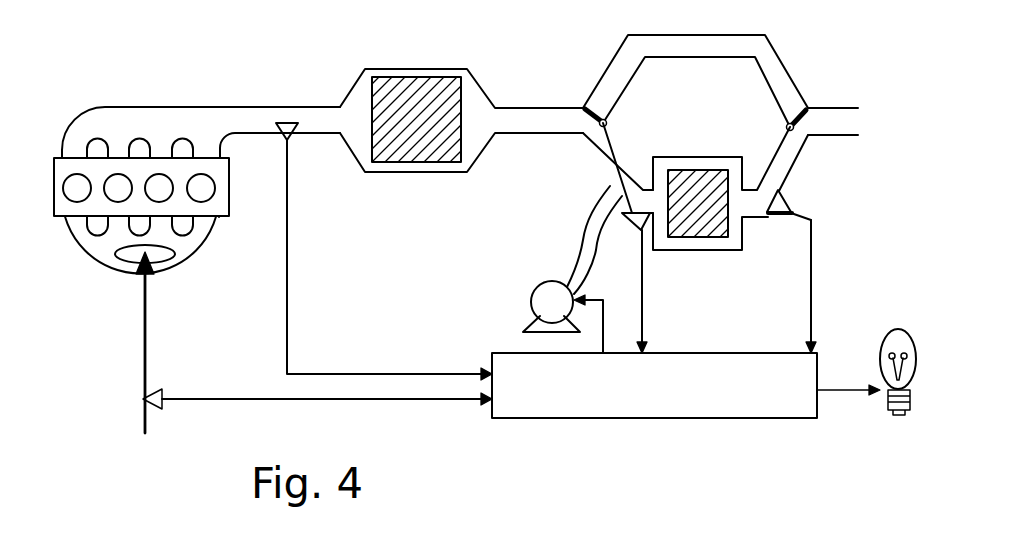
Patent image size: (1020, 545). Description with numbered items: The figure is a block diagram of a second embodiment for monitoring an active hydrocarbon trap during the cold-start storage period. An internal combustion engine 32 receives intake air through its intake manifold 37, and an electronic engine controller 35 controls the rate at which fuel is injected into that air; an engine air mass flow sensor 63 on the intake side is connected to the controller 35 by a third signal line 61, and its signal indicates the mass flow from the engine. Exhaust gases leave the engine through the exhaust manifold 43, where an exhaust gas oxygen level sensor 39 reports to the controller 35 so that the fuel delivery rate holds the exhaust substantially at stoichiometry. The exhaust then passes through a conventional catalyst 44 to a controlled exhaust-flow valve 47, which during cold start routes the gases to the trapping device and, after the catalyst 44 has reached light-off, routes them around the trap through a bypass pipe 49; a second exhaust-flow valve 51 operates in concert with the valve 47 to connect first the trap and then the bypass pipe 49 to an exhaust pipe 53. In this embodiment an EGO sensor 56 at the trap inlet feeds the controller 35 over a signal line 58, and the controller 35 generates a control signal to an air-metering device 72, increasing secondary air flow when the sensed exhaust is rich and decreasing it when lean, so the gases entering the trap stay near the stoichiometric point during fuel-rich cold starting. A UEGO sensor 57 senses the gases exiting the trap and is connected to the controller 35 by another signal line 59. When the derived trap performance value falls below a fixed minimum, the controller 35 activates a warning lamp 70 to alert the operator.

The internal combustion engine 32 is at (229, 195).
The electronic engine controller 35 is at (508, 352).
The intake manifold 37 is at (122, 268).
The exhaust gas oxygen level sensor 39 is at (294, 135).
The exhaust manifold 43 is at (127, 107).
The catalyst 44 is at (402, 69).
The controlled exhaust-flow valve 47 is at (588, 110).
The bypass pipe 49 is at (792, 80).
The second exhaust-flow valve 51 is at (802, 112).
The exhaust pipe 53 is at (850, 137).
The EGO sensor 56 is at (635, 222).
The UEGO sensor 57 is at (793, 200).
The signal line 58 is at (645, 318).
The signal line 59 is at (813, 306).
The third signal line 61 is at (268, 398).
The engine air mass flow sensor 63 is at (163, 394).
The warning lamp 70 is at (900, 328).
The air-metering device 72 is at (545, 283).